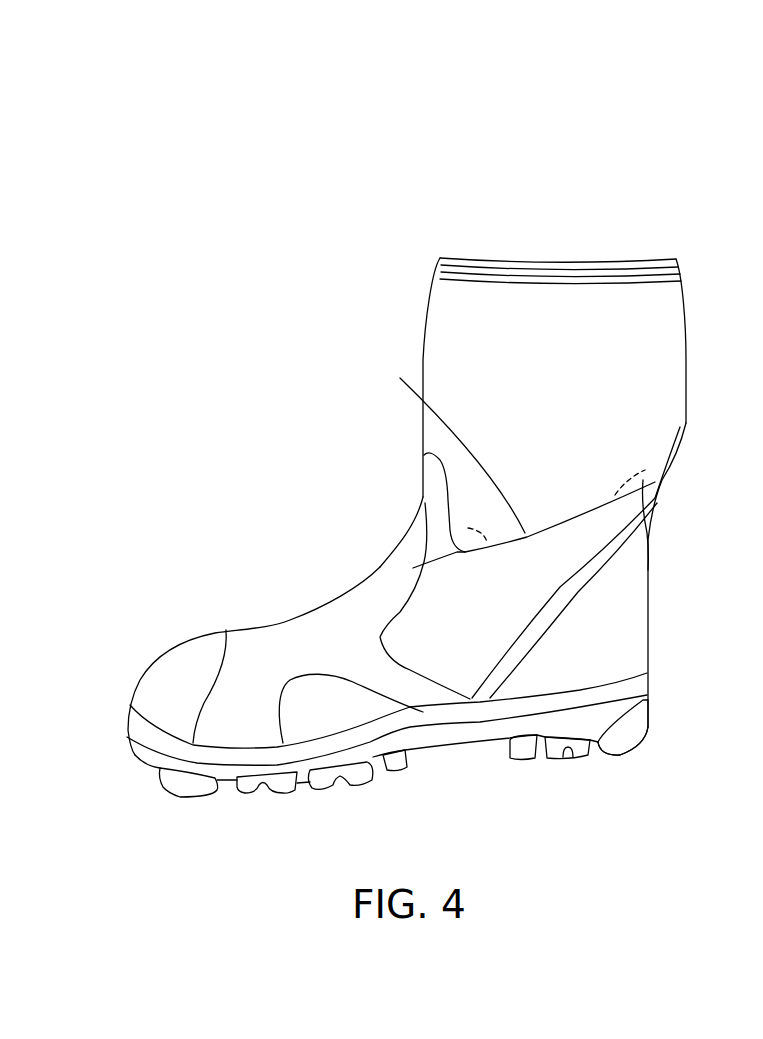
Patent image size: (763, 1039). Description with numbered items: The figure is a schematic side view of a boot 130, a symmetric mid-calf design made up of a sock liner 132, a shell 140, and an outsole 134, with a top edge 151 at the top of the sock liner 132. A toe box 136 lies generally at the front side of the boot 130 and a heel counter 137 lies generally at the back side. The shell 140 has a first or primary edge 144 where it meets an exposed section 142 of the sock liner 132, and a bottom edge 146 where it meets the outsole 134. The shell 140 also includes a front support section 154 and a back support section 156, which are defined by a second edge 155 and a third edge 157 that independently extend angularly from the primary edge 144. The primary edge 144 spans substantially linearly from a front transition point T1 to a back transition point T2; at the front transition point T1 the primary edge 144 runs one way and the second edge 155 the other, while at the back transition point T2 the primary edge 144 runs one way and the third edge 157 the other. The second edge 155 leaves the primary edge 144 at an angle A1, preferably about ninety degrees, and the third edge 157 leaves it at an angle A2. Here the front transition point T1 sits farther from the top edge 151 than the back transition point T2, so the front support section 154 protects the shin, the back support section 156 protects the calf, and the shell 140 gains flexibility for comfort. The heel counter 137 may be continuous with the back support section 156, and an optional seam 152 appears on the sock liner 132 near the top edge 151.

The boot 130 is at (290, 178).
The sock liner 132 is at (571, 387).
The outsole 134 is at (382, 767).
The toe box 136 is at (198, 652).
The heel counter 137 is at (620, 640).
The shell 140 is at (509, 625).
The exposed section of the sock liner 142 is at (425, 318).
The first or primary edge 144 is at (400, 378).
The bottom edge 146 is at (152, 768).
The top edge 151 is at (490, 258).
The seam 152 is at (450, 258).
The front support section 154 is at (435, 483).
The second edge 155 is at (447, 502).
The back support section 156 is at (650, 468).
The third edge 157 is at (675, 448).
The angle A1 is at (428, 545).
The angle A2 is at (652, 530).
The front transition point T1 is at (413, 568).
The back transition point T2 is at (657, 498).